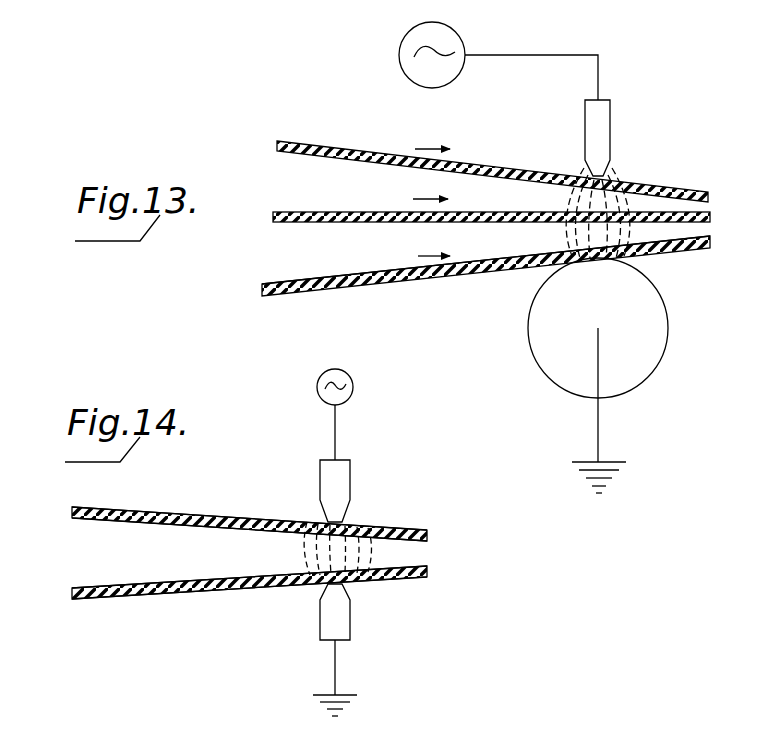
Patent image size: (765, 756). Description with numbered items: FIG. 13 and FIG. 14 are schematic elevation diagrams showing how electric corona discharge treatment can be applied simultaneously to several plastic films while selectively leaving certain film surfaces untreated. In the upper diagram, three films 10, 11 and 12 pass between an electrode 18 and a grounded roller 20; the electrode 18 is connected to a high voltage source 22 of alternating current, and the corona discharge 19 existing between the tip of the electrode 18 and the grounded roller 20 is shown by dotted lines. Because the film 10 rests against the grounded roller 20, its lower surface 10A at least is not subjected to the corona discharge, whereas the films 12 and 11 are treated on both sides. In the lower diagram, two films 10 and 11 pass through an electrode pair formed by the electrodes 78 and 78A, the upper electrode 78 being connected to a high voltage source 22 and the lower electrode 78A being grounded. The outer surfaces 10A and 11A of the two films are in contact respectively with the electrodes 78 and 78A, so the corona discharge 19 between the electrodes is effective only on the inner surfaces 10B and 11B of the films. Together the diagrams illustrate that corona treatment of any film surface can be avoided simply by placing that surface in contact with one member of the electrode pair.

In FIG. 13, the first film 10 is at (313, 284).
In FIG. 14, the first film 10 is at (80, 520).
In FIG. 13, the lower surface of film 10 10A is at (482, 266).
In FIG. 14, the lower surface of film 10 10A is at (265, 516).
In FIG. 14, the inner surface of film 10 10B is at (212, 530).
In FIG. 13, the second film 11 is at (310, 212).
In FIG. 14, the second film 11 is at (80, 600).
In FIG. 14, the outer surface of film 11 11A is at (210, 597).
In FIG. 14, the inner surface of film 11 11B is at (205, 580).
In FIG. 13, the third film 12 is at (318, 141).
In FIG. 13, the electrode 18 is at (610, 109).
In FIG. 13, the corona discharge 19 is at (620, 172).
In FIG. 14, the corona discharge 19 is at (290, 582).
In FIG. 13, the ground roller 20 is at (570, 395).
In FIG. 13, the high voltage source 22 is at (462, 32).
In FIG. 14, the high voltage source 22 is at (353, 382).
In FIG. 14, the electrode 78 is at (350, 478).
In FIG. 14, the electrode 78A is at (350, 612).